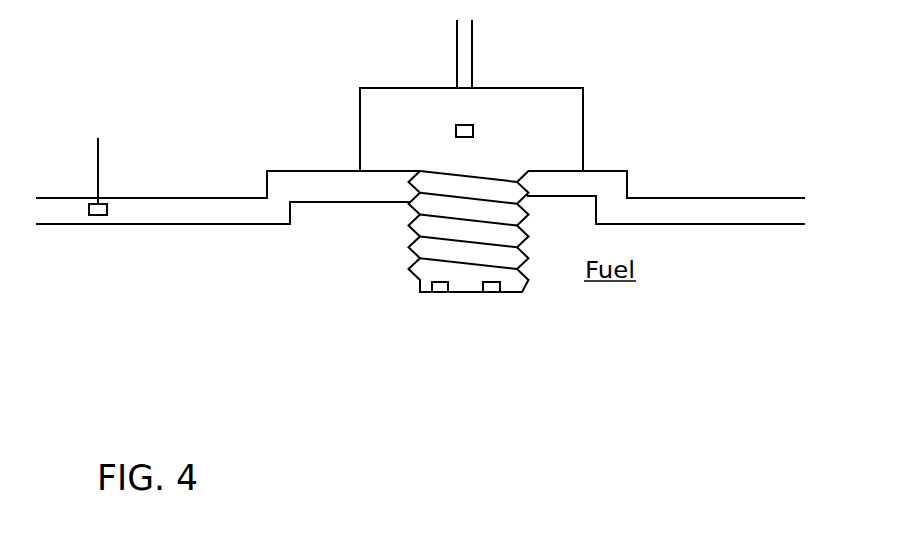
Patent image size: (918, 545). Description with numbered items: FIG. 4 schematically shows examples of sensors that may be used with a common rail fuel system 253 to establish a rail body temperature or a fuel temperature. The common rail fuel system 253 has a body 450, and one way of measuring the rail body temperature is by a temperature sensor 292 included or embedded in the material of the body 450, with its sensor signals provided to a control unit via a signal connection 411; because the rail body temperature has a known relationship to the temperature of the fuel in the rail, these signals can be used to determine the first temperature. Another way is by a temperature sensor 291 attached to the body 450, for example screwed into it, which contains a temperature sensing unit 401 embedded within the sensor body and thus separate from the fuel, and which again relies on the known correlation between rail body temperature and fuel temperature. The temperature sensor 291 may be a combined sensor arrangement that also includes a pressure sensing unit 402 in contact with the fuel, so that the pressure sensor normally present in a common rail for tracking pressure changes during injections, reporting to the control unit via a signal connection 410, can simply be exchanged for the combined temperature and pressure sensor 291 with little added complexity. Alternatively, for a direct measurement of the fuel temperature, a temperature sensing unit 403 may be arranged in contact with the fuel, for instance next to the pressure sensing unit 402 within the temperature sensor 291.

The common rail fuel system 253 is at (299, 268).
The body 450 is at (761, 226).
The temperature sensor 291 is at (583, 103).
The signal connection 410 is at (472, 47).
The temperature sensing unit 401 is at (473, 132).
The signal connection 411 is at (98, 147).
The temperature sensor 292 is at (107, 212).
The pressure sensing unit 402 is at (440, 293).
The temperature sensing unit 403 is at (491, 293).